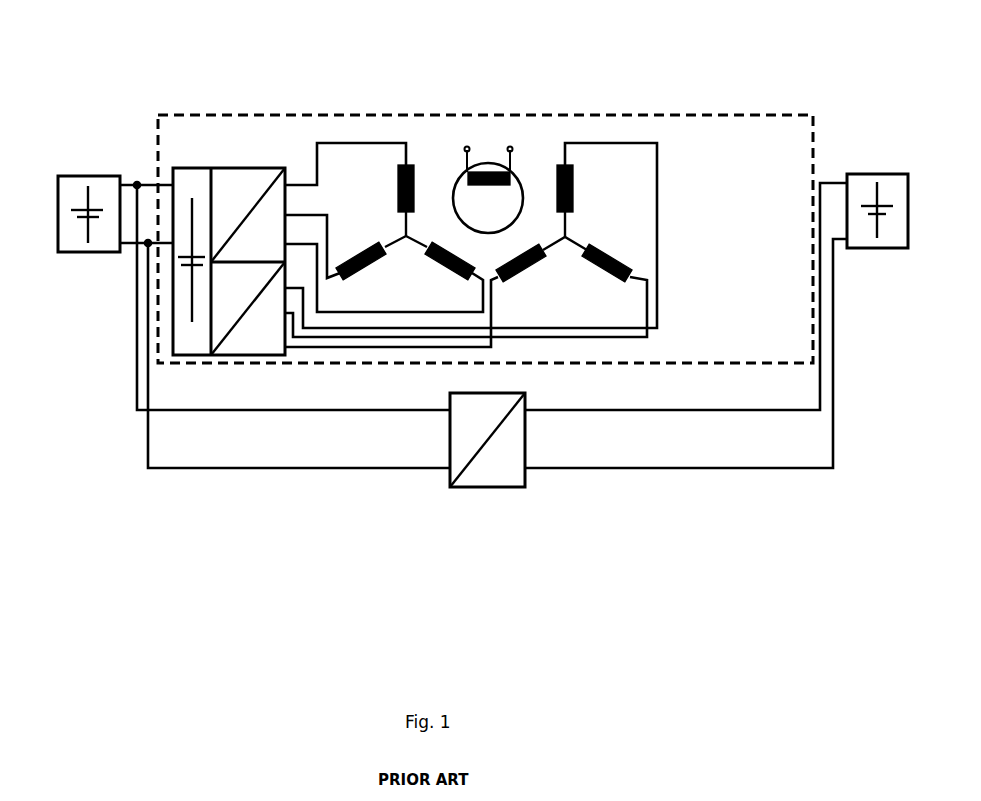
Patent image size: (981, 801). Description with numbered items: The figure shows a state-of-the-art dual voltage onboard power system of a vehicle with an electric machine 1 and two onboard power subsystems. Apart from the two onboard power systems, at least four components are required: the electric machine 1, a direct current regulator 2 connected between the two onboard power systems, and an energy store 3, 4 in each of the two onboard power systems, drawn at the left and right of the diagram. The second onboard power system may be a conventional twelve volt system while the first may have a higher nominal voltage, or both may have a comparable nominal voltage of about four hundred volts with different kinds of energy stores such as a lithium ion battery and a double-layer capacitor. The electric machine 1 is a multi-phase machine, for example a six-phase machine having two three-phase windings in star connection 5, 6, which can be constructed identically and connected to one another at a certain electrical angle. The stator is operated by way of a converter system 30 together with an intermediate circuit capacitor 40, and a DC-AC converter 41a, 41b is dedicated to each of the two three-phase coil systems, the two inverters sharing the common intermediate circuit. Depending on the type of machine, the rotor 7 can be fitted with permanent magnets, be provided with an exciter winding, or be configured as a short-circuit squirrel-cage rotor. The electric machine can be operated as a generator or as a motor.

The electric machine 1 is at (485, 207).
The direct current regulator 2 is at (487, 474).
The energy store 3 is at (89, 193).
The energy store 4 is at (877, 188).
The 3-phase winding in star connection 5 is at (423, 170).
The 3-phase winding in star connection 6 is at (589, 178).
The rotor 7 is at (517, 125).
The converter system 30 is at (244, 178).
The intermediate circuit capacitor 40 is at (157, 352).
The DC-AC converter 41a is at (217, 353).
The DC-AC converter 41b is at (249, 394).